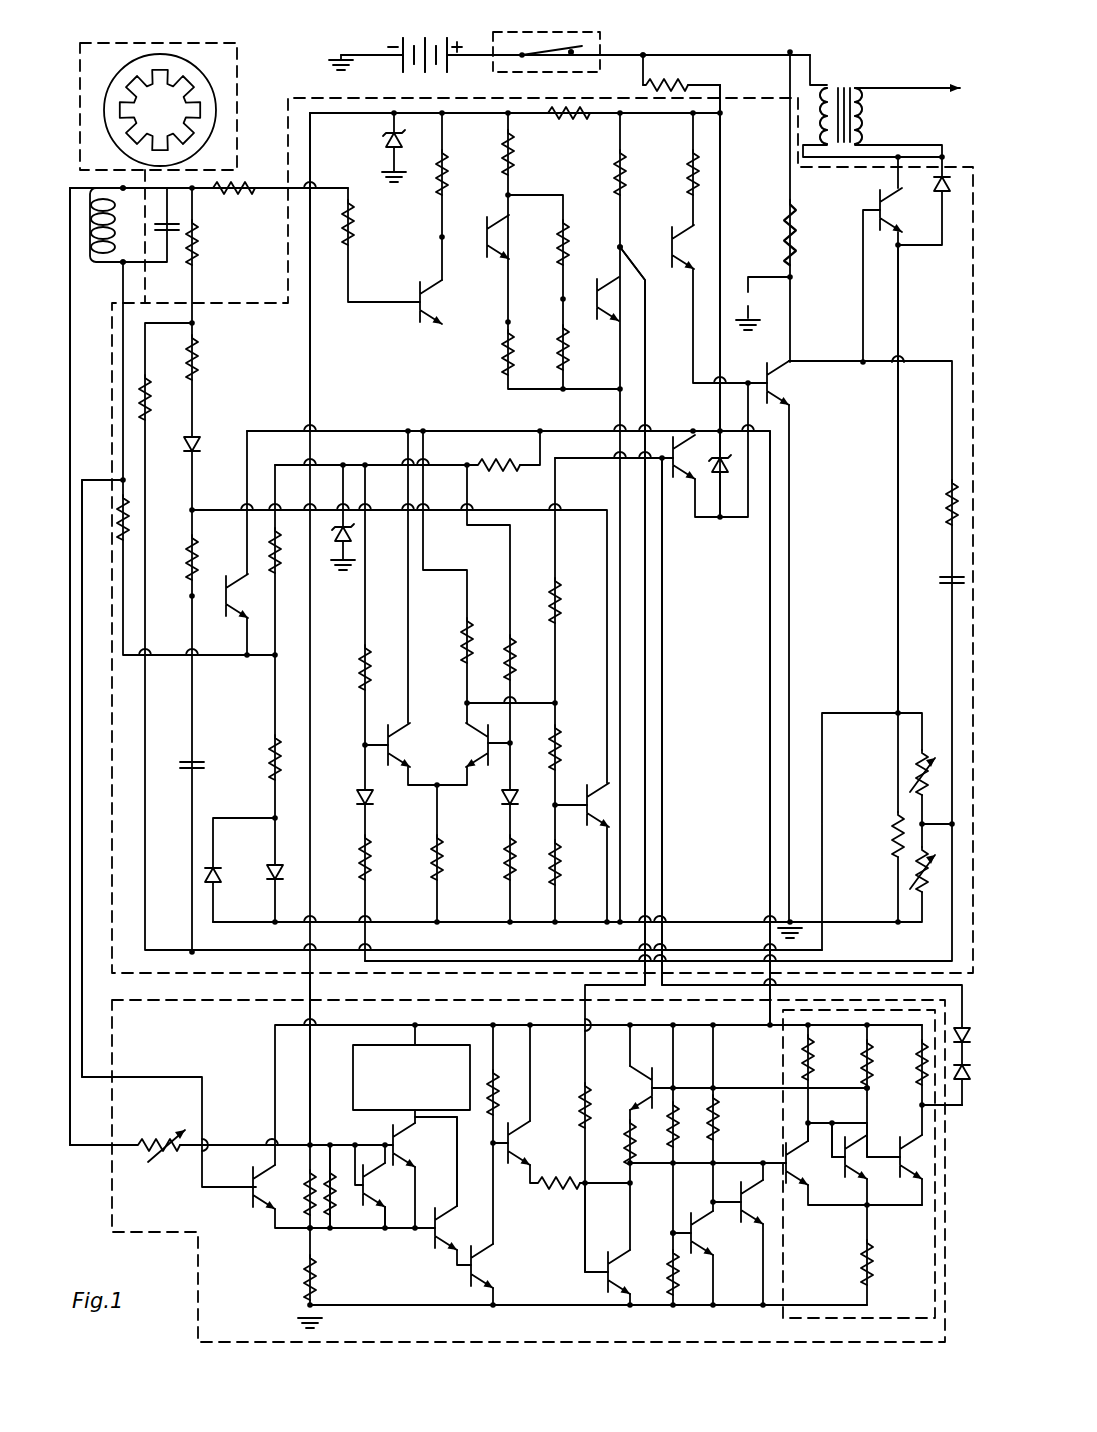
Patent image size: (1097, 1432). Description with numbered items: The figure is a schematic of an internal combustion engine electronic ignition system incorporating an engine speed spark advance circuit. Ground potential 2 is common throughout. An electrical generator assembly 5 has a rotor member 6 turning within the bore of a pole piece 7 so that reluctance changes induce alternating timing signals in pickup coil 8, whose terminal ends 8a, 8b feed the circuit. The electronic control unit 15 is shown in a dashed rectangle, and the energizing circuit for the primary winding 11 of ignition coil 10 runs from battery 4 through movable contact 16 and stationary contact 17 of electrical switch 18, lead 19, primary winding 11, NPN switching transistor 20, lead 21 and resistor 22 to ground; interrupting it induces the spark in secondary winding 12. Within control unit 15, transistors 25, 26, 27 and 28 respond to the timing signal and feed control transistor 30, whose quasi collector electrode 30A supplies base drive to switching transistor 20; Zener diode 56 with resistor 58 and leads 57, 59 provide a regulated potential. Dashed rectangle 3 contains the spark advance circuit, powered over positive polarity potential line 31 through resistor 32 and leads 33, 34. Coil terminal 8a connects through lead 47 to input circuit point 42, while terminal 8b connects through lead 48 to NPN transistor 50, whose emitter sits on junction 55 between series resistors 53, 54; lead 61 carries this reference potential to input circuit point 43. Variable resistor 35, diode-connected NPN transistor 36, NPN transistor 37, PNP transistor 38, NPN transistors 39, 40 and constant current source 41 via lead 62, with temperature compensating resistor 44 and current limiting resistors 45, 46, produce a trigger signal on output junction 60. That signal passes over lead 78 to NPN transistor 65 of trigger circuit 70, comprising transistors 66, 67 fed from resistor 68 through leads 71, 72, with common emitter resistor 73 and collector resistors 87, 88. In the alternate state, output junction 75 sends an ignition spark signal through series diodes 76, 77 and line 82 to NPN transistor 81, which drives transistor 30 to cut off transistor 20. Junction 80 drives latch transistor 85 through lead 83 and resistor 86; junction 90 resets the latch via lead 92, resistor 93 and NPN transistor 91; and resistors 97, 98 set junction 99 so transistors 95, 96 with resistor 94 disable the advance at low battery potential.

The point of reference or ground potential 2 is at (334, 64).
The dashed rectangle 3 is at (110, 1214).
The storage battery 4 is at (403, 42).
The electrical generator assembly 5 is at (237, 88).
The rotor member 6 is at (166, 106).
The pole piece 7 is at (205, 130).
The pickup coil 8 is at (110, 216).
The terminal end of output coil 8a is at (122, 186).
The other terminal end of output coil 8b is at (121, 266).
The ignition coil 10 is at (832, 80).
The primary winding 11 is at (820, 115).
The secondary winding 12 is at (866, 118).
The electronic control unit 15 is at (288, 280).
The movable contact 16 is at (556, 49).
The stationary contact 17 is at (578, 54).
The electrical switch 18 is at (520, 32).
The lead 19 is at (644, 54).
The NPN switching transistor 20 is at (886, 212).
The lead 21 is at (900, 334).
The resistor 22 is at (894, 828).
The NPN transistor 25 is at (432, 302).
The NPN transistor 26 is at (506, 232).
The NPN transistor 27 is at (594, 320).
The NPN transistor 28 is at (665, 244).
The control transistor 30 is at (792, 385).
The quasi collector electrode 30A is at (792, 360).
The positive polarity potential line 31 is at (318, 1030).
The resistor 32 is at (700, 82).
The lead 33 is at (722, 232).
The lead 34 is at (768, 598).
The variable resistor 35 is at (162, 1158).
The NPN transistor connected as a diode 36 is at (370, 1185).
The NPN transistor 37 is at (400, 1144).
The PNP transistor 38 is at (442, 1228).
The NPN transistor 39 is at (480, 1266).
The NPN transistor 40 is at (518, 1143).
The constant current source 41 is at (352, 1068).
The input circuit point 42 is at (71, 1150).
The input circuit point 43 is at (386, 1234).
The temperature compensating resistor 44 is at (334, 1196).
The current limiting resistor 45 is at (496, 1086).
The current limiting resistor 46 is at (562, 1186).
The lead 47 is at (72, 412).
The lead 48 is at (84, 480).
The NPN transistor 50 is at (250, 1197).
The resistor 53 is at (306, 1170).
The resistor 54 is at (303, 1264).
The junction 55 is at (302, 1232).
The Zener diode 56 is at (387, 150).
The lead 57 is at (628, 118).
The resistor 58 is at (555, 116).
The lead 59 is at (312, 168).
The output junction 60 is at (587, 1195).
The lead 61 is at (338, 1232).
The lead 62 is at (457, 1132).
The NPN transistor 65 is at (796, 1160).
The NPN transistor 66 is at (852, 1160).
The NPN transistor 67 is at (912, 1160).
The resistor 68 is at (805, 1045).
The trigger circuit 70 is at (783, 1140).
The lead 71 is at (833, 1124).
The lead 72 is at (871, 1130).
The common emitter resistor 73 is at (872, 1256).
The output junction 75 is at (930, 1108).
The series diode 76 is at (965, 1080).
The series diode 77 is at (965, 1030).
The lead 78 is at (736, 1163).
The junction 80 is at (869, 1090).
The NPN transistor 81 is at (690, 484).
The line 82 is at (664, 858).
The lead 83 is at (738, 1086).
The NPN transistor 85 is at (648, 1088).
The resistor 86 is at (628, 1140).
The collector resistor 87 is at (864, 1060).
The collector resistor 88 is at (920, 1062).
The junction 90 is at (616, 247).
The NPN transistor 91 is at (627, 1272).
The lead 92 is at (646, 318).
The resistor 93 is at (582, 1095).
The resistor 94 is at (710, 1102).
The NPN transistor 95 is at (702, 1237).
The NPN transistor 96 is at (752, 1205).
The resistor 97 is at (668, 1122).
The resistor 98 is at (671, 1266).
The junction 99 is at (672, 1230).